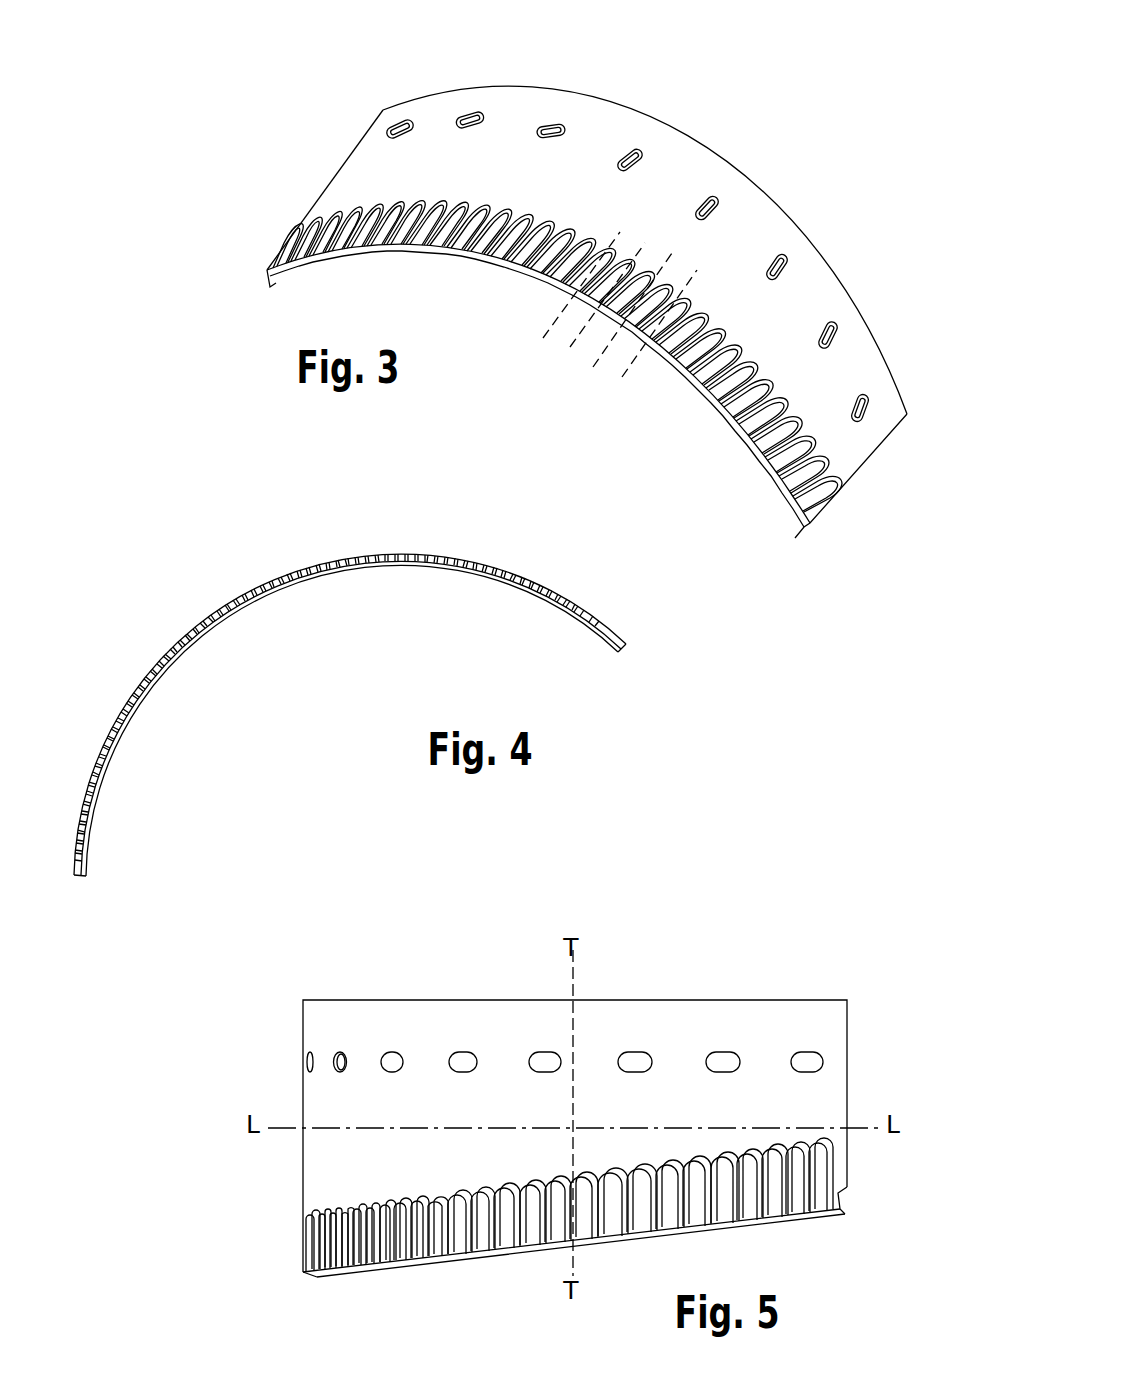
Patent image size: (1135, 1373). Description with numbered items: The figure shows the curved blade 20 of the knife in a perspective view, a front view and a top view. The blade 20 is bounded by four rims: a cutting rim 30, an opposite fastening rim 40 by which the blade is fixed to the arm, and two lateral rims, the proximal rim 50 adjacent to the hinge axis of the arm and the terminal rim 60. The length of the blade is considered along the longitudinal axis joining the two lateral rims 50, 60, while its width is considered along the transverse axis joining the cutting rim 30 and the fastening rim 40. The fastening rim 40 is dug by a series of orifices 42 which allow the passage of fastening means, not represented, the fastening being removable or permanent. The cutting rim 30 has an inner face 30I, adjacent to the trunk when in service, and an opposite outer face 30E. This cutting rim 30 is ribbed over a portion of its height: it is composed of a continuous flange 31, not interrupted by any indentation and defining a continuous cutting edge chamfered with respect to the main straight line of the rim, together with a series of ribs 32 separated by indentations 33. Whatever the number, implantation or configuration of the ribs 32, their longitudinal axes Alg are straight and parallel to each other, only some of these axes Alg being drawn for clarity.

In FIG. 3, the blade 20 is at (800, 186).
In FIG. 4, the blade 20 is at (307, 678).
In FIG. 5, the blade 20 is at (803, 982).
In FIG. 3, the cutting rim 30 is at (450, 280).
In FIG. 4, the cutting rim 30 is at (395, 583).
In FIG. 5, the cutting rim 30 is at (610, 1258).
In FIG. 4, the outer face 30E is at (472, 557).
In FIG. 4, the inner face 30I is at (200, 648).
In FIG. 3, the continuous flange 31 is at (370, 260).
In FIG. 3, the ribs 32 is at (722, 355).
In FIG. 4, the ribs 32 is at (355, 557).
In FIG. 3, the indentations 33 is at (477, 251).
In FIG. 4, the indentations 33 is at (158, 662).
In FIG. 3, the fastening rim 40 is at (602, 99).
In FIG. 5, the fastening rim 40 is at (628, 988).
In FIG. 5, the orifices 42 is at (547, 1058).
In FIG. 3, the proximal rim 50 is at (358, 146).
In FIG. 4, the proximal rim 50 is at (78, 882).
In FIG. 5, the proximal rim 50 is at (290, 1027).
In FIG. 3, the terminal rim 60 is at (865, 460).
In FIG. 4, the terminal rim 60 is at (624, 654).
In FIG. 5, the terminal rim 60 is at (852, 1042).
In FIG. 3, the longitudinal axes of the ribs Alg is at (593, 367).